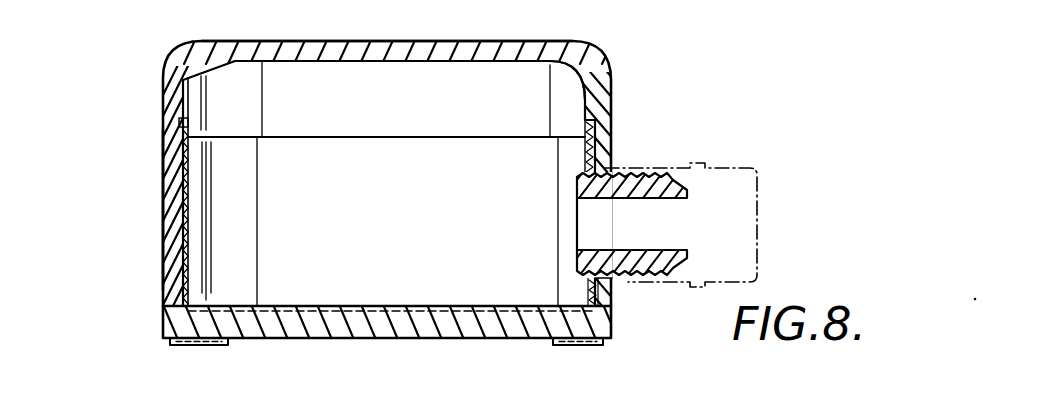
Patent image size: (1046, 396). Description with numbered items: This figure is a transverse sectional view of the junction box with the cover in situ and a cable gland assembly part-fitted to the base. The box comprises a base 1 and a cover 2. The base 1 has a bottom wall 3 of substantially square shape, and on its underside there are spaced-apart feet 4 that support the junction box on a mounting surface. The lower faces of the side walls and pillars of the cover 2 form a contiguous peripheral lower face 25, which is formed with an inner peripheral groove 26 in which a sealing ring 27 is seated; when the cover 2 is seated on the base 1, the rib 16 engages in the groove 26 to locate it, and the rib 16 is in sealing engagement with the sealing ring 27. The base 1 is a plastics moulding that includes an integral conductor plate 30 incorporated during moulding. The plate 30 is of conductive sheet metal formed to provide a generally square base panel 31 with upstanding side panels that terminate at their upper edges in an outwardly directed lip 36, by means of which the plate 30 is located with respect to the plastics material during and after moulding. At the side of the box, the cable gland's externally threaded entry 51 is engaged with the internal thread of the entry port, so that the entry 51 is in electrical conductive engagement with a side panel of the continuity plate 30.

The base 1 is at (163, 289).
The cover 2 is at (265, 42).
The bottom wall 3 is at (428, 330).
The feet 4 is at (174, 348).
The rib 16 is at (611, 147).
The peripheral lower face 25 is at (166, 147).
The inner peripheral groove 26 is at (611, 131).
The sealing ring 27 is at (611, 105).
The conductor plate 30 is at (163, 208).
The base panel 31 is at (388, 277).
The lip 36 is at (166, 168).
The externally threaded entry 51 is at (620, 297).